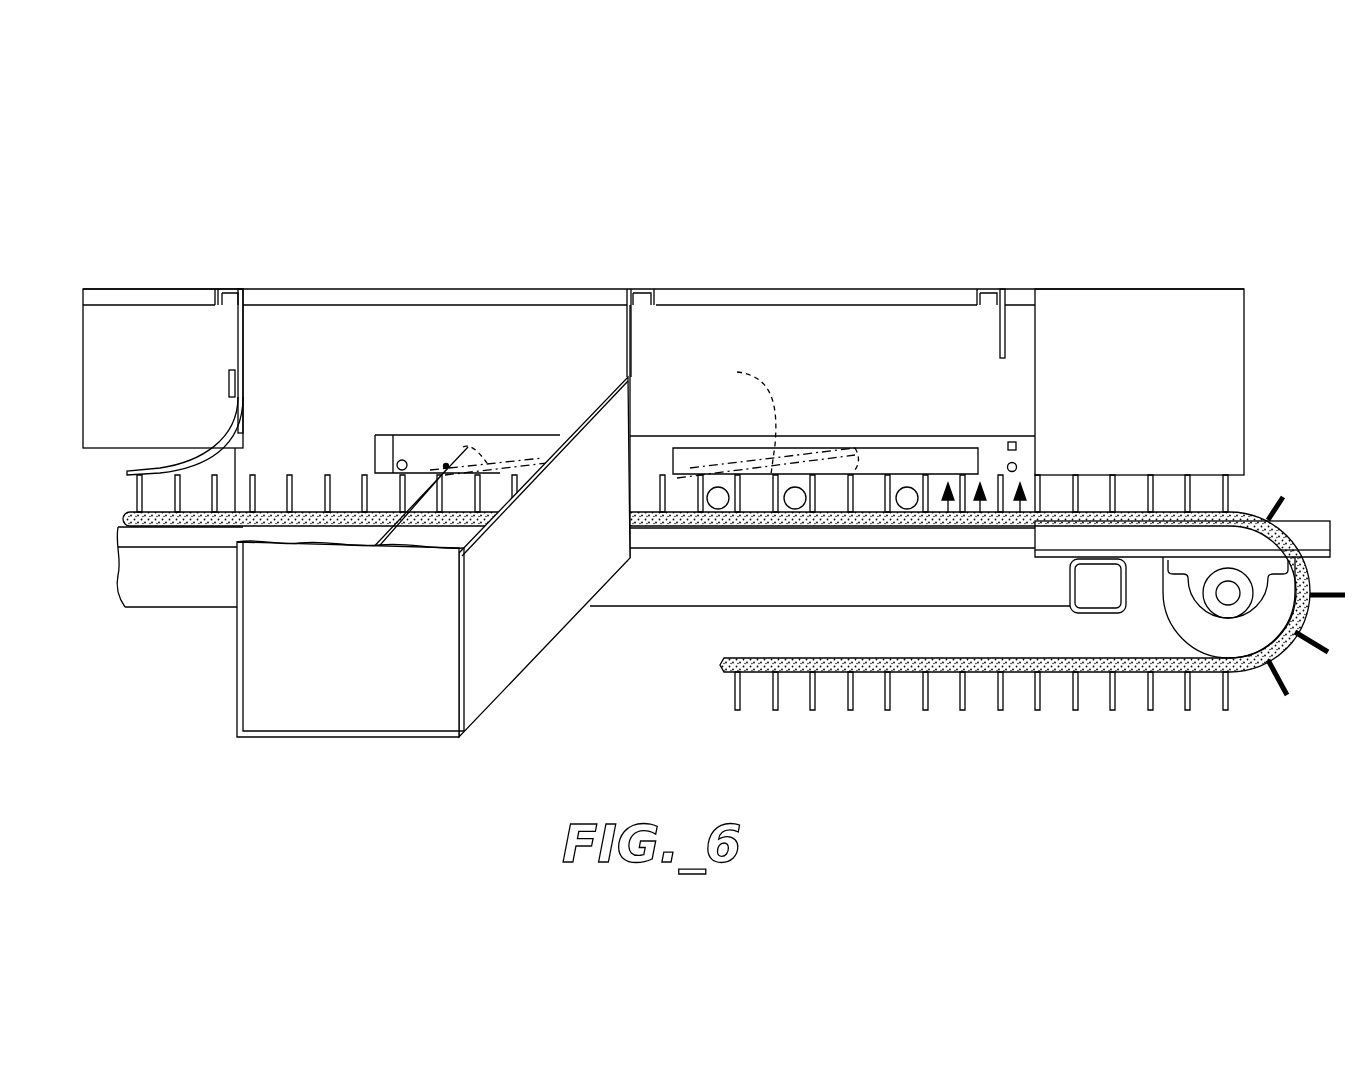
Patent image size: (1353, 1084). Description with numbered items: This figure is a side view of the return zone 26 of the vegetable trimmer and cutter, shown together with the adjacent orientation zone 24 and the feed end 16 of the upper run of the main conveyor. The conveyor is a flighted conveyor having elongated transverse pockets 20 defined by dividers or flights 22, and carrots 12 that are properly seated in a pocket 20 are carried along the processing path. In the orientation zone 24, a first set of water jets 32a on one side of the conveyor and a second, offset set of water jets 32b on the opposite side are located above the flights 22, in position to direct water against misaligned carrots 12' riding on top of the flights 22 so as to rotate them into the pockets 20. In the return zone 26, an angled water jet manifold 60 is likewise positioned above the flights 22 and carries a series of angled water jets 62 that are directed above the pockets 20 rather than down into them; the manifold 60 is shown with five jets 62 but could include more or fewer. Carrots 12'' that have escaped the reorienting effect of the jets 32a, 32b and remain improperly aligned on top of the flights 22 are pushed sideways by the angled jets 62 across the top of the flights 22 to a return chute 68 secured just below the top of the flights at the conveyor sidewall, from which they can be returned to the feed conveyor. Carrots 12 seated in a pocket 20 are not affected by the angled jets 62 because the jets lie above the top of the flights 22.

The return zone 26 is at (437, 246).
The orientation zone 24 is at (835, 246).
The feed end 16 is at (1135, 246).
The angled water jets 62 is at (445, 463).
The angled water jet manifold 60 is at (493, 435).
The flights 22 is at (757, 483).
The carrots 12 is at (812, 540).
The misaligned carrots 12' is at (735, 419).
The improperly aligned carrots 12'' is at (399, 598).
The first set of water jets 32a is at (860, 445).
The second set of water jets 32b is at (967, 455).
The pockets 20 is at (1018, 515).
The return chute 68 is at (260, 655).